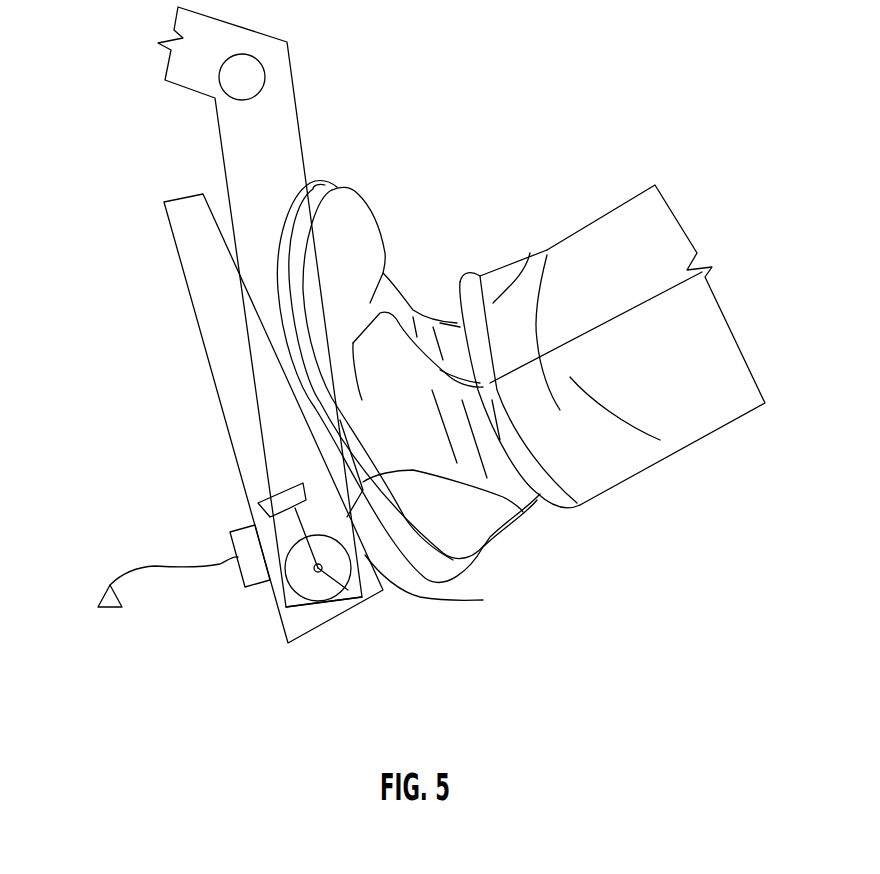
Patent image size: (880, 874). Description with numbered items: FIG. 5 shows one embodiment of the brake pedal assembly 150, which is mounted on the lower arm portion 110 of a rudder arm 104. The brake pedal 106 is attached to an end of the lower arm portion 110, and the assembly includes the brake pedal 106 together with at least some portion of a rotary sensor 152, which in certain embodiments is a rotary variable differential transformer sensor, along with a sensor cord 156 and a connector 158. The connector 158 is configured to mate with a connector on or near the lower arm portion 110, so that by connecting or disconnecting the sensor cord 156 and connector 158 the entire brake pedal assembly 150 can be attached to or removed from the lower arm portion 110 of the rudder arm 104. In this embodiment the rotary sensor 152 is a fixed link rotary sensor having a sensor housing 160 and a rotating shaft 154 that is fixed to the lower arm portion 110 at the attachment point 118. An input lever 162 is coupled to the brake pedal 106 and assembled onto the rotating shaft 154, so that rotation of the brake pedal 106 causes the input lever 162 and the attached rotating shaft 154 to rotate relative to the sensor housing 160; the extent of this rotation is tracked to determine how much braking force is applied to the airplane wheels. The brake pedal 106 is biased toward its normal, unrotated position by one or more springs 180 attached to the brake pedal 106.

The rudder arm 104 is at (290, 68).
The brake pedal 106 is at (233, 427).
The lower arm portion 110 is at (307, 170).
The attachment point 118 is at (266, 602).
The brake pedal assembly 150 is at (128, 307).
The rotary sensor 152 is at (317, 597).
The rotating shaft 154 is at (348, 590).
The sensor cord 156 is at (160, 567).
The connector 158 is at (113, 610).
The sensor housing 160 is at (352, 578).
The input lever 162 is at (400, 590).
The spring 180 is at (280, 614).